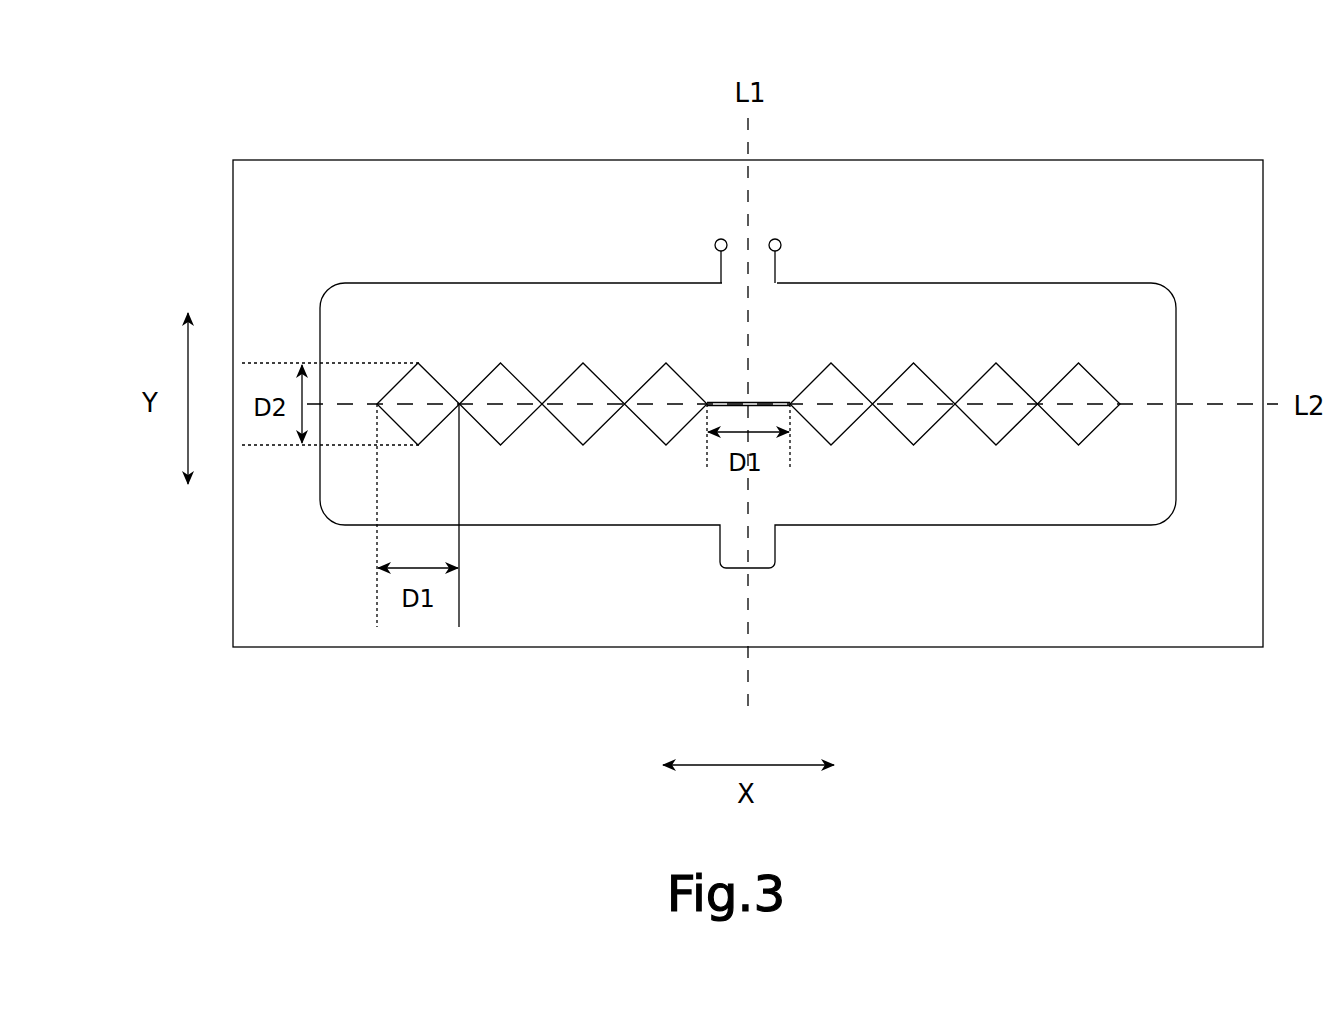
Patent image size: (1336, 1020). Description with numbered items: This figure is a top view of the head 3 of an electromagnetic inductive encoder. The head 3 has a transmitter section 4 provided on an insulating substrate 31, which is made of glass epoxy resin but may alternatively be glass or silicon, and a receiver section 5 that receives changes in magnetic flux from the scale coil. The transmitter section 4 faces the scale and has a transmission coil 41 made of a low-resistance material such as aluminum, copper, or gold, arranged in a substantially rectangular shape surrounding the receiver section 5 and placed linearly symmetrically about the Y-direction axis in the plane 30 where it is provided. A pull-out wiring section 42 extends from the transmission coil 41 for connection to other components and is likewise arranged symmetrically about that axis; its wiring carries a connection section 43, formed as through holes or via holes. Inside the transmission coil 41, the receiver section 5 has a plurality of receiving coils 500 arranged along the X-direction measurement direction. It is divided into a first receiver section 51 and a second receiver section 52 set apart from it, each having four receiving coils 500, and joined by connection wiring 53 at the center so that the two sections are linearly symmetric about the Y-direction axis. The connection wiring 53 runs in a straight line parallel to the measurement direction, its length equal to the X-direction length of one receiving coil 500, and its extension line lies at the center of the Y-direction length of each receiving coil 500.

The head 3 is at (1229, 109).
The plane 30 is at (975, 180).
The insulating substrate 31 is at (1098, 160).
The transmitter section 4 is at (1080, 547).
The transmission coil 41 is at (1023, 283).
The pull-out wiring section 42 is at (720, 270).
The connection section 43 is at (716, 239).
The receiver section 5 is at (732, 403).
The receiving coil 500 is at (532, 387).
The first receiver section 51 is at (707, 453).
The second receiver section 52 is at (790, 453).
The connection wiring 53 is at (766, 398).